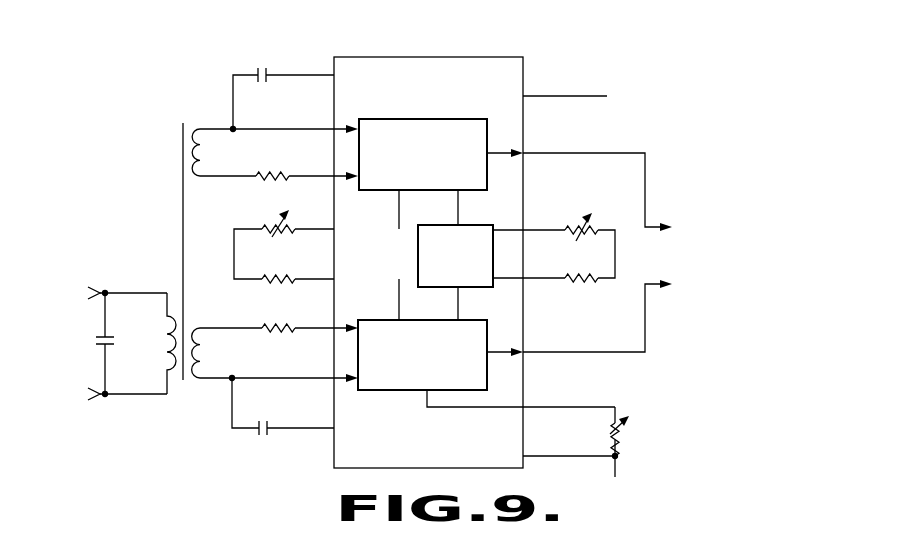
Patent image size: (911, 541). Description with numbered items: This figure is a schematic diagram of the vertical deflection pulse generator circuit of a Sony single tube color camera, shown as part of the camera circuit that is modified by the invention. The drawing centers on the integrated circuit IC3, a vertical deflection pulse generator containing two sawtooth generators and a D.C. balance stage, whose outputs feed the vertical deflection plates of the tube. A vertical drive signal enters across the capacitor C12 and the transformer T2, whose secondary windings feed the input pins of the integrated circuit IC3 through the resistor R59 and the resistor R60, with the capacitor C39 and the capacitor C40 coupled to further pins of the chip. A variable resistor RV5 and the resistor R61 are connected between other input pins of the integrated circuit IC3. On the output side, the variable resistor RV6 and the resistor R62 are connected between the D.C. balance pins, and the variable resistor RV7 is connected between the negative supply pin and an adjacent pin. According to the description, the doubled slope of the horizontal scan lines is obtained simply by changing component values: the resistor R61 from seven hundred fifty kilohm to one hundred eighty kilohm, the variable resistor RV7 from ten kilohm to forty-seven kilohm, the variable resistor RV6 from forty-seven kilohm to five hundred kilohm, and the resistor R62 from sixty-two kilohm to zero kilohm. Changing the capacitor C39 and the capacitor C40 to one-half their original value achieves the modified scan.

The SX 369 V deflection pulse generator integrated circuit IC3 is at (535, 250).
The vertical drive transformer T2 is at (187, 247).
The capacitor C39 is at (261, 100).
The resistor 4700 R59 is at (270, 154).
The variable resistor 470K RV5 is at (264, 244).
The resistor R61 is at (275, 298).
The resistor 4700 R60 is at (270, 351).
The capacitor C40 is at (259, 428).
The capacitor 1000P C12 is at (100, 343).
The variable resistor RV6 is at (590, 206).
The resistor R62 is at (581, 299).
The variable resistor RV7 is at (640, 431).